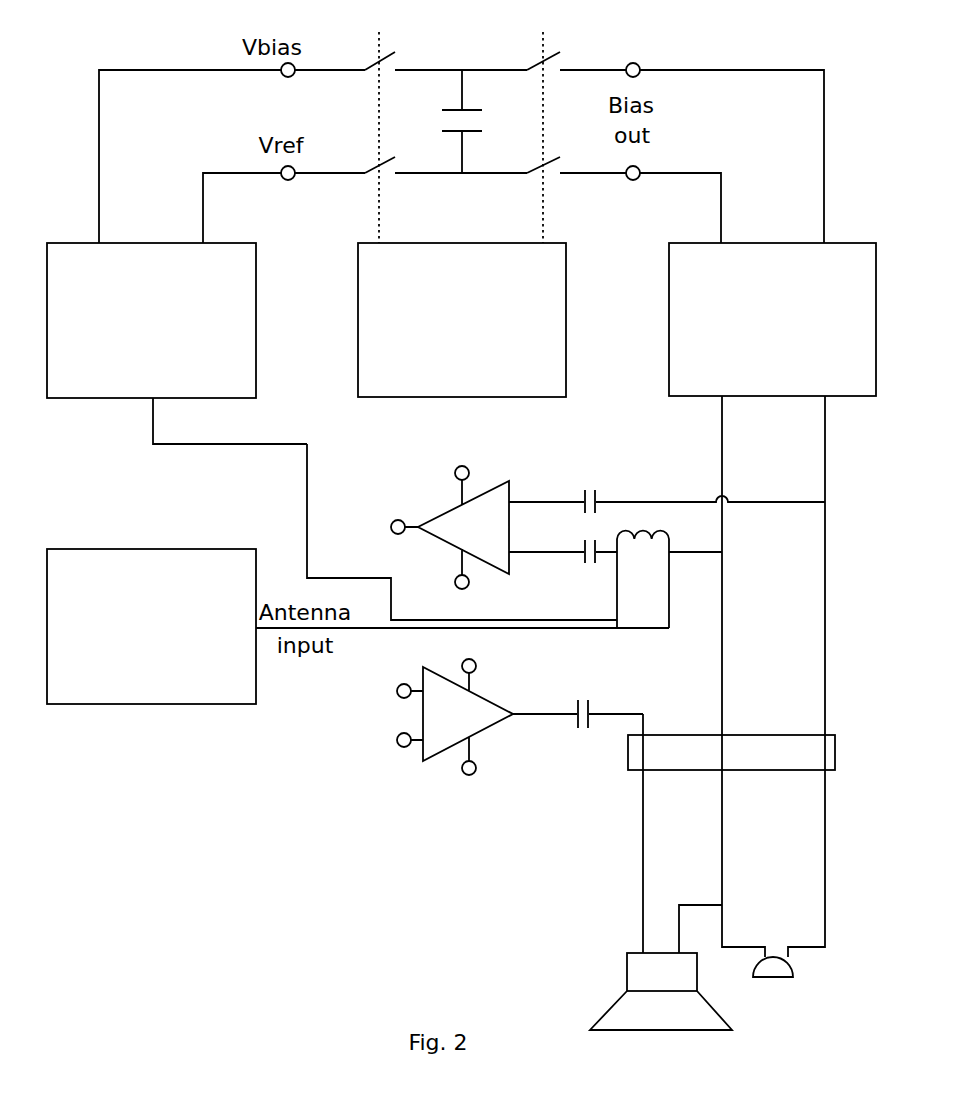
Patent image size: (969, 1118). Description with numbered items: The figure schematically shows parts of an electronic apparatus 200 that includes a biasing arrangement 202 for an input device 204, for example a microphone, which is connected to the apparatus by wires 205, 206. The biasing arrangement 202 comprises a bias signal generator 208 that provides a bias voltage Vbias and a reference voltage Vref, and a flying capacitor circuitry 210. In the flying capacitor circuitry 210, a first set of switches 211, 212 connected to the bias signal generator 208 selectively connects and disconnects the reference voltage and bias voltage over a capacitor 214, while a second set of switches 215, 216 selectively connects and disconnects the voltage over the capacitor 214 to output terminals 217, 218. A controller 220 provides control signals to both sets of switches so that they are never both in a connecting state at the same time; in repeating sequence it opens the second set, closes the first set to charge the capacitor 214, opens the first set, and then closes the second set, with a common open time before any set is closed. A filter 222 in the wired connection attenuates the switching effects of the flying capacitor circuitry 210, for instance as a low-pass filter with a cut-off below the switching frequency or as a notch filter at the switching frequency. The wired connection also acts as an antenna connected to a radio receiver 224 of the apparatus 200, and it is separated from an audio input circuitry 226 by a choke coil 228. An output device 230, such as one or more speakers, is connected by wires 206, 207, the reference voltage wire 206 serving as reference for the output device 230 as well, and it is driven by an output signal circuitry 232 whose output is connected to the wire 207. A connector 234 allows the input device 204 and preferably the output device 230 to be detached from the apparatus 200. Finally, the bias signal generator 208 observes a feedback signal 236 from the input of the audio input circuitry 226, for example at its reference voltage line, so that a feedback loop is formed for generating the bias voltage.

The electronic apparatus 200 is at (302, 818).
The biasing arrangement 202 is at (278, 454).
The input device 204 is at (773, 968).
The wire 205 is at (825, 886).
The wire 206 is at (722, 862).
The wire 207 is at (643, 842).
The bias signal generator 208 is at (237, 367).
The flying capacitor circuitry 210 is at (372, 206).
The switch of first set of switches 211 is at (373, 172).
The switch of first set of switches 212 is at (368, 64).
The capacitor 214 is at (458, 118).
The switch of second set of switches 215 is at (545, 167).
The switch of second set of switches 216 is at (548, 56).
The output terminal 217 is at (635, 180).
The output terminal 218 is at (637, 62).
The controller 220 is at (547, 377).
The filter 222 is at (690, 332).
The radio receiver 224 is at (170, 685).
The audio input circuitry 226 is at (405, 503).
The choke coil 228 is at (656, 535).
The output device 230 is at (638, 983).
The output signal circuitry 232 is at (467, 806).
The connector 234 is at (640, 742).
The feedback signal 236 is at (153, 444).